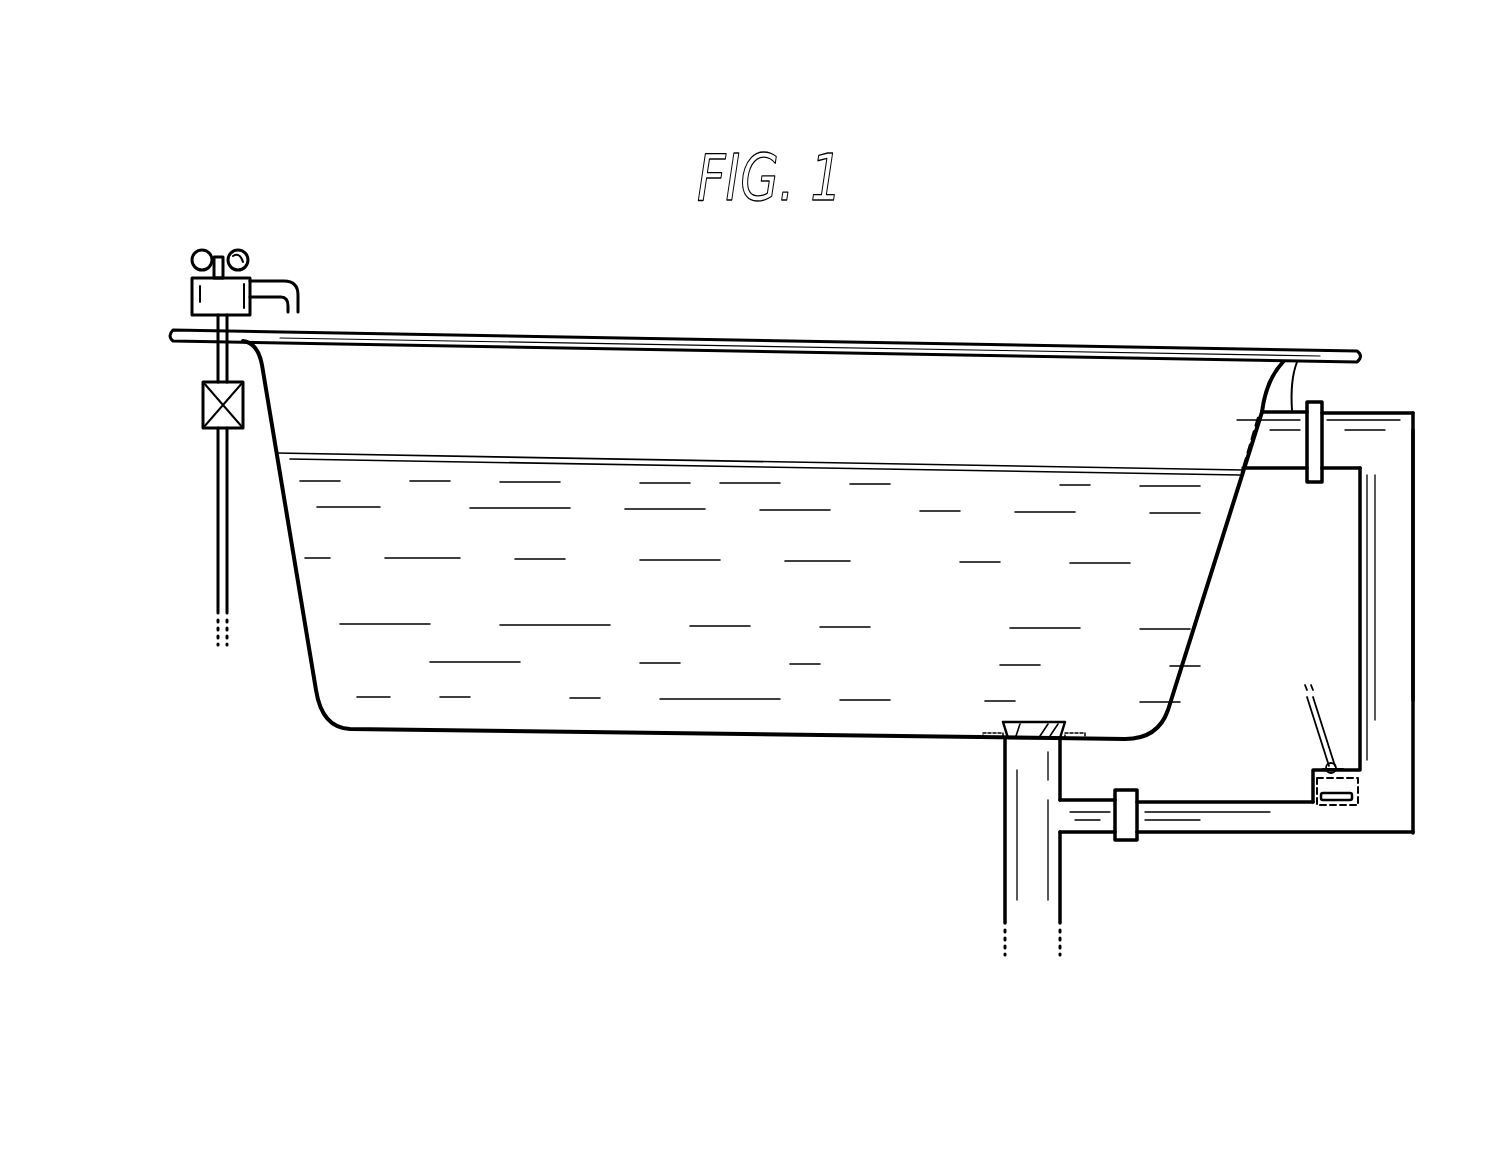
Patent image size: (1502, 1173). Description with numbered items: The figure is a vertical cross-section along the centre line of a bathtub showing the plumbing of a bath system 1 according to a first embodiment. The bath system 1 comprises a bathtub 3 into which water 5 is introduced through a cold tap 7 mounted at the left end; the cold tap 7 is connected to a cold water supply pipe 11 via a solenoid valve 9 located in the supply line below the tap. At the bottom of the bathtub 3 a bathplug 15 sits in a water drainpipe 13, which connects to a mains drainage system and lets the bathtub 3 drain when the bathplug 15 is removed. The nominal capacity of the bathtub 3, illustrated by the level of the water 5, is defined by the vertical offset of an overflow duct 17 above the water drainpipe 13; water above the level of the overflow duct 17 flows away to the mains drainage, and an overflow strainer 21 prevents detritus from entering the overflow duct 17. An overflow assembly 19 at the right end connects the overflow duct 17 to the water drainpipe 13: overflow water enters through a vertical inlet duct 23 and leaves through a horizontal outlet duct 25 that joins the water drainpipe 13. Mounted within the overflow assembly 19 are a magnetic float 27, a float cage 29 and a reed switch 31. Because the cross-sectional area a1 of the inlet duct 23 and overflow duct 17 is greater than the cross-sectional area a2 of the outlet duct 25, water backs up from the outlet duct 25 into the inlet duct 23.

The bath system 1 is at (564, 792).
The bathtub 3 is at (354, 728).
The water 5 is at (683, 480).
The cold tap 7 is at (262, 282).
The solenoid valve 9 is at (203, 388).
The cold water supply pipe 11 is at (212, 540).
The water drainpipe 13 is at (1005, 798).
The bathplug 15 is at (1033, 720).
The overflow duct 17 is at (1283, 408).
The overflow assembly 19 is at (1420, 638).
The overflow strainer 21 is at (1248, 448).
The inlet duct 23 is at (1417, 470).
The outlet duct 25 is at (1173, 834).
The magnetic float 27 is at (1342, 791).
The float cage 29 is at (1360, 793).
The reed switch 31 is at (1327, 767).
The cross-sectional area of the inlet duct a1 is at (1485, 567).
The cross-sectional area of the outlet duct a2 is at (1212, 752).